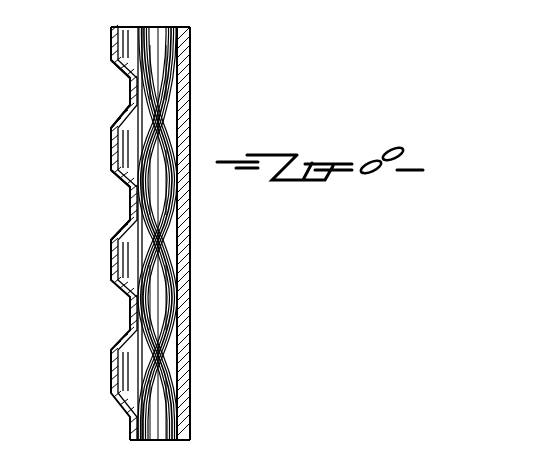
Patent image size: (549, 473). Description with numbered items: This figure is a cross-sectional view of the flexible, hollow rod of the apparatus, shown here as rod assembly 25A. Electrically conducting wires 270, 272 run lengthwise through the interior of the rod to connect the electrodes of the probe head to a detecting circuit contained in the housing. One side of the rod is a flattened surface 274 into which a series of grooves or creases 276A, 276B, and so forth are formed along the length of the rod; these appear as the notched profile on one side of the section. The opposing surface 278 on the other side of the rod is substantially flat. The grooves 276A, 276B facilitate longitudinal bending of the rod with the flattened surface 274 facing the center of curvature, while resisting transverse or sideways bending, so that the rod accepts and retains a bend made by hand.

The strap assembly 25A is at (192, 300).
The electrically conducting wire 270 is at (185, 393).
The electrically conducting wire 272 is at (172, 125).
The flattened surface 274 is at (109, 393).
The groove 276A is at (131, 98).
The groove 276B is at (131, 202).
The opposing surface 278 is at (180, 49).